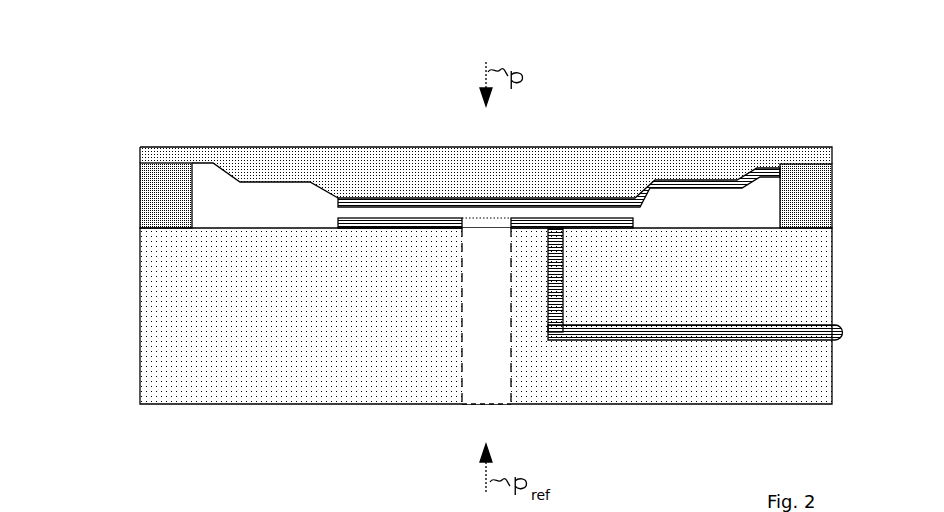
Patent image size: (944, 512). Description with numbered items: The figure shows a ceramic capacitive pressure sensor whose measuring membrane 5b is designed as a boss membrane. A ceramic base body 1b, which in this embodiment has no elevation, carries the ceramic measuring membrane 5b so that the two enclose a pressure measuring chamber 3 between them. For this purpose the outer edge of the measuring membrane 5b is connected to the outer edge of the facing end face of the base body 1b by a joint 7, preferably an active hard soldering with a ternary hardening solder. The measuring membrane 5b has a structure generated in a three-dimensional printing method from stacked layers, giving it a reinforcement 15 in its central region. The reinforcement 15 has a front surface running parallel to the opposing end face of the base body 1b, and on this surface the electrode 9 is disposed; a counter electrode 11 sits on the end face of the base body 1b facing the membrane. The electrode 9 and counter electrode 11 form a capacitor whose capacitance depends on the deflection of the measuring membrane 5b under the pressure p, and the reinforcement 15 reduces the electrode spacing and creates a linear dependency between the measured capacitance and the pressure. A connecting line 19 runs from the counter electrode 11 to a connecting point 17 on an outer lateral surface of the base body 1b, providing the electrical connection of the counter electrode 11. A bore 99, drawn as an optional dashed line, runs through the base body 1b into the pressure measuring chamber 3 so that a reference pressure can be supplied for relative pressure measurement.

The base body 1b is at (150, 280).
The reference pressure channel 99 is at (500, 325).
The measuring membrane 5b is at (265, 160).
The joint 7 is at (140, 190).
The reinforcement 15 is at (393, 192).
The electrode 9 is at (595, 192).
The pressure measuring chamber 3 is at (681, 223).
The counter electrode 11 is at (374, 425).
The connecting line 19 is at (647, 422).
The connecting point 17 is at (859, 340).